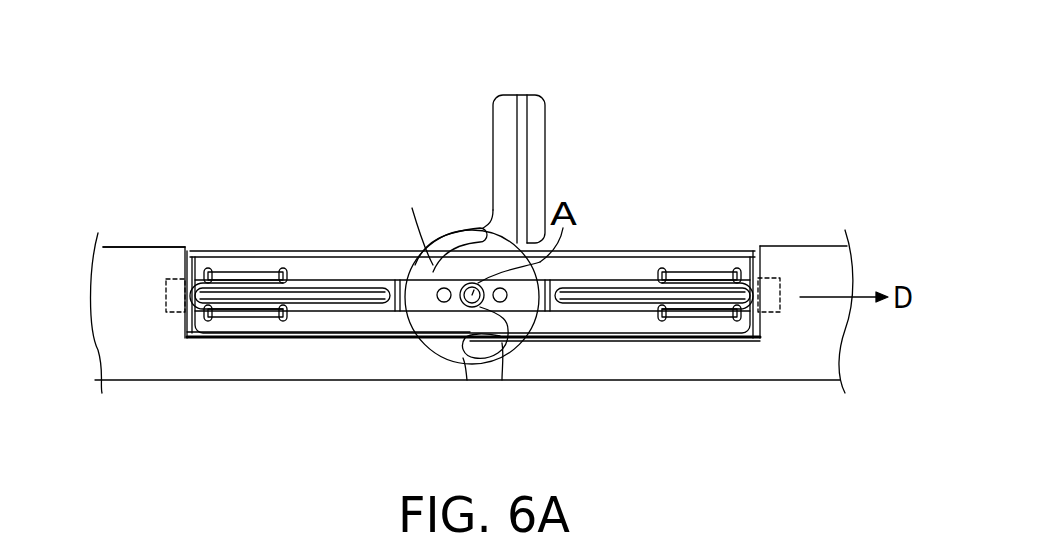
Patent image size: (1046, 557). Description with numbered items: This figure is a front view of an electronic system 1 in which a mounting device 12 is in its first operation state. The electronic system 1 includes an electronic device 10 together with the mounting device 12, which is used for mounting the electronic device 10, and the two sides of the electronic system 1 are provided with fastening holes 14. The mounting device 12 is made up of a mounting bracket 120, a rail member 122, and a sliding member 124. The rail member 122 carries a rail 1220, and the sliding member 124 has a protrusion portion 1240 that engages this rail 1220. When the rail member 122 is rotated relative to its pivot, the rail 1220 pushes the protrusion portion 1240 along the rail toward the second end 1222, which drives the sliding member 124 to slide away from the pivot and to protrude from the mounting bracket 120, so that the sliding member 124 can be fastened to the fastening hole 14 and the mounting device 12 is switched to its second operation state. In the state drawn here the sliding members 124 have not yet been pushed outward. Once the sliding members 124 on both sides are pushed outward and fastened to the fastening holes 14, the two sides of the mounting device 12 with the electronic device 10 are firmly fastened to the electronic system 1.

The electronic system 1 is at (155, 248).
The electronic device 10 is at (197, 340).
The mounting device 12 is at (437, 27).
The fastening hole 14 is at (165, 305).
The mounting bracket 120 is at (281, 250).
The rail member 122 is at (492, 98).
The sliding member 124 is at (335, 280).
The rail 1220 is at (507, 393).
The second end 1222 is at (483, 228).
The protrusion portion 1240 is at (444, 297).